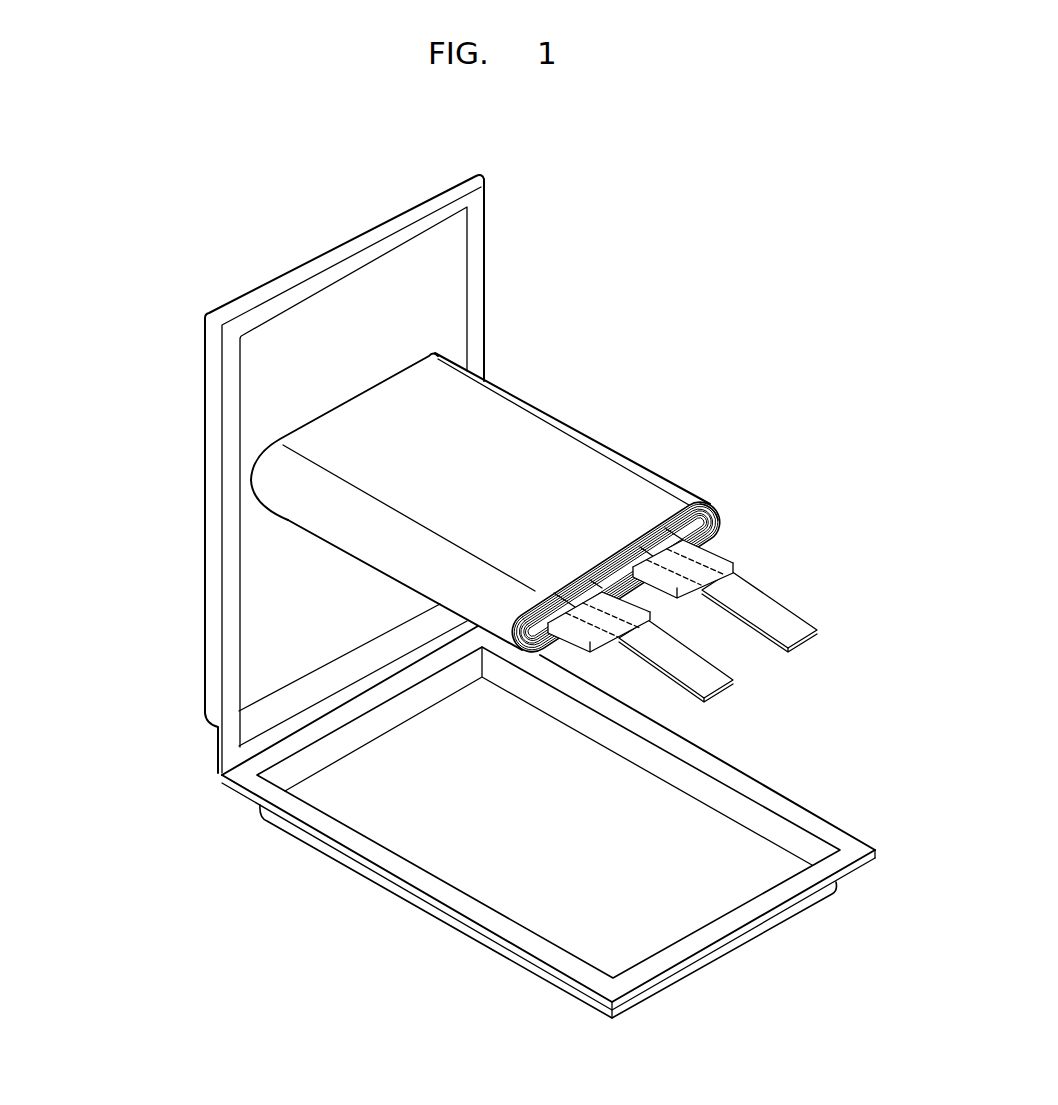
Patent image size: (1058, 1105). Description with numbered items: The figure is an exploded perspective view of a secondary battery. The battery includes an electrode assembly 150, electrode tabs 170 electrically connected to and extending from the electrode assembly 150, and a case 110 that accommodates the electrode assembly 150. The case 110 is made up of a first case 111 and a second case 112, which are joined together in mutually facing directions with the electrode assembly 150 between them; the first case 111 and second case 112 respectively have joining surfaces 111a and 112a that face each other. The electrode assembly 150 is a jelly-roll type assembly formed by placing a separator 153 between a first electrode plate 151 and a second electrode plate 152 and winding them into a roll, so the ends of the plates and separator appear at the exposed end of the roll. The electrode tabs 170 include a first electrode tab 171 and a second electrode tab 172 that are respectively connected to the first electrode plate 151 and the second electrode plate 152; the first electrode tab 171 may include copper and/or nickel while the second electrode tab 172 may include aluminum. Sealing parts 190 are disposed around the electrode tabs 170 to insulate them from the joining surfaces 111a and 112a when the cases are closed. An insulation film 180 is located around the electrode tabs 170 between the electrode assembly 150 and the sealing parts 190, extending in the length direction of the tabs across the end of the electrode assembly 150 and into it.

The case 110 is at (487, 596).
The first case 111 is at (296, 474).
The joining surface 111a is at (228, 553).
The second case 112 is at (548, 822).
The joining surface 112a is at (422, 883).
The electrode assembly 150 is at (558, 561).
The first electrode plate 151 is at (515, 652).
The second electrode plate 152 is at (533, 653).
The separator 153 is at (527, 655).
The electrode tabs 170 is at (709, 641).
The first electrode tab 171 is at (802, 640).
The second electrode tab 172 is at (668, 657).
The insulation film 180 is at (697, 518).
The sealing parts 190 is at (713, 557).